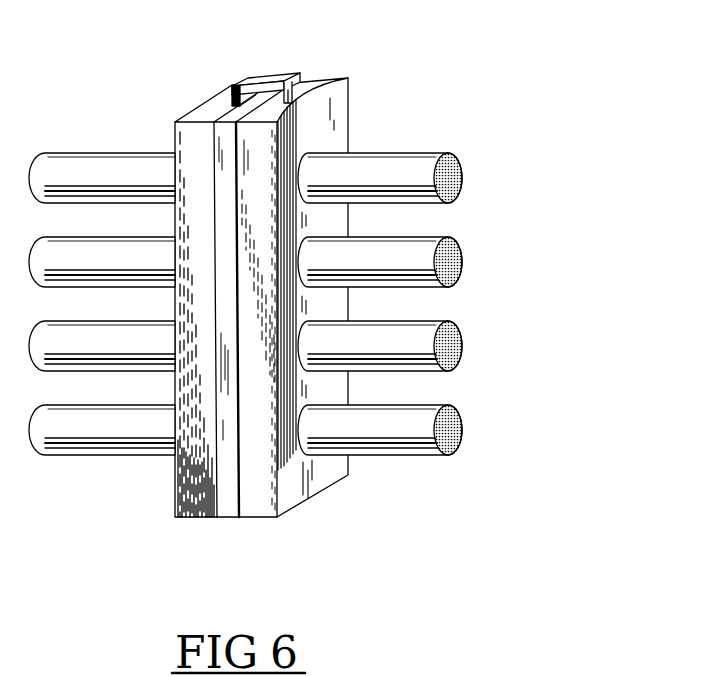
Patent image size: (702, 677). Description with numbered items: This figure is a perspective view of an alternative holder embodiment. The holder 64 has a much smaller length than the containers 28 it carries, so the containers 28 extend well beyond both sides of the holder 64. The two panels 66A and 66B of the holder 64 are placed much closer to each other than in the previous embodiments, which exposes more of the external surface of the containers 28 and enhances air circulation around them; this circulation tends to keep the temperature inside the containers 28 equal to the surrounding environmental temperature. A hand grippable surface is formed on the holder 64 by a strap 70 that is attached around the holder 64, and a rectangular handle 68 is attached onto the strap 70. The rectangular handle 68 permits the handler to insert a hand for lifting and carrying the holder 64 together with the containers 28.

The containers 28 is at (455, 200).
The holder 64 is at (259, 294).
The panel 66A is at (333, 120).
The panel 66B is at (173, 125).
The rectangular handle 68 is at (232, 83).
The strap 70 is at (223, 518).